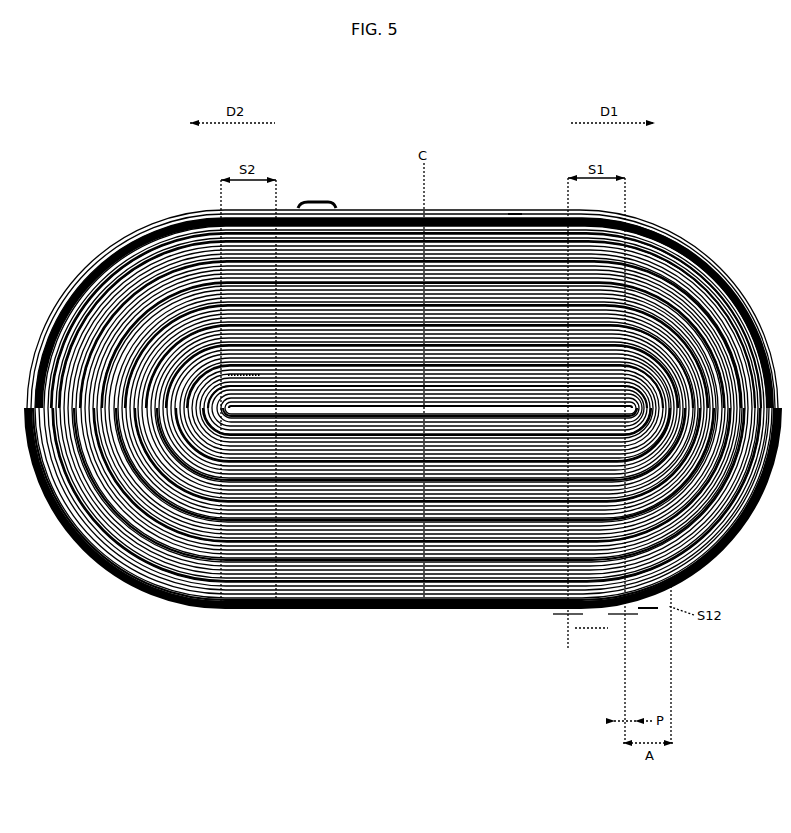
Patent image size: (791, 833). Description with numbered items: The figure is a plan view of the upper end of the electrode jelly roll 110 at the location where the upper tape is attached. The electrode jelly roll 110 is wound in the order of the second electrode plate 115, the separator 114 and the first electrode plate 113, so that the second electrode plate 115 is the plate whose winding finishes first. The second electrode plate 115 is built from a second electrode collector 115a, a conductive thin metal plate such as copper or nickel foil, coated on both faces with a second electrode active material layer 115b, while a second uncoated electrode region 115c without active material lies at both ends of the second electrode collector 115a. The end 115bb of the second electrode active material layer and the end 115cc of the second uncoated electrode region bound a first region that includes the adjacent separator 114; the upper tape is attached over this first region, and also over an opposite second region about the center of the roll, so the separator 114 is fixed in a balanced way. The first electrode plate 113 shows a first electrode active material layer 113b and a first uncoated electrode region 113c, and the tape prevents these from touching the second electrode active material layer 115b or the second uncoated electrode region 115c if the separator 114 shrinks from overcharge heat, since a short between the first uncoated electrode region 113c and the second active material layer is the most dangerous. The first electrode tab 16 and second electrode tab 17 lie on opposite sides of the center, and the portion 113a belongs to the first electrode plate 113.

The electrode jelly roll 110 is at (62, 85).
The first terminal 16 is at (300, 193).
The second terminal 17 is at (507, 200).
The separator 114 is at (285, 600).
The first electrode plate 113 is at (500, 659).
The first pattern portion 113a is at (452, 612).
The first electrode active material layer 113b is at (413, 612).
The first uncoated electrode region 113c is at (517, 612).
The second electrode plate 115 is at (617, 683).
The second electrode collector 115a is at (543, 612).
The second electrode active material layer 115b is at (569, 650).
The second uncoated electrode region 115c is at (624, 650).
The end of the second electrode active material layer 115bb is at (580, 613).
The end of the second uncoated electrode region 115cc is at (640, 613).